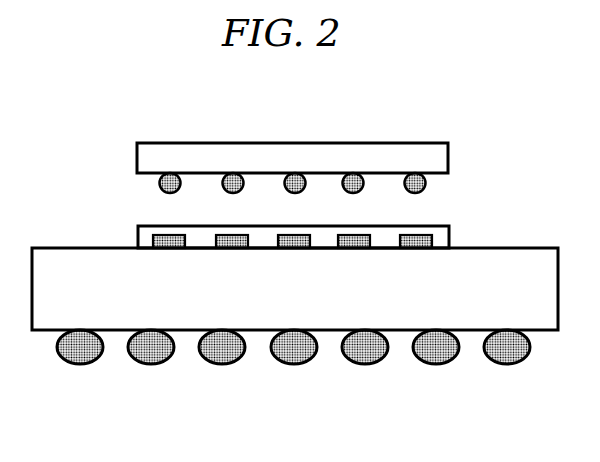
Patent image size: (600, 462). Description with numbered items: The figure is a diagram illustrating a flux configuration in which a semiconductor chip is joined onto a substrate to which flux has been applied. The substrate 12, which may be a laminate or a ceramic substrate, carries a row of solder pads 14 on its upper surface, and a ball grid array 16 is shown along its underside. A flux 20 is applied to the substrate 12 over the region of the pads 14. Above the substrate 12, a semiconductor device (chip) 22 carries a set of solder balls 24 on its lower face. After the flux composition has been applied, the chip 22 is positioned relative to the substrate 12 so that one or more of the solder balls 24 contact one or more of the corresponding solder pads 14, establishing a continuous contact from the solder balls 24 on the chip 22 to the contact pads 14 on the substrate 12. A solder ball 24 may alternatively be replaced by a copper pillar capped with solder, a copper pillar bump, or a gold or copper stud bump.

The substrate 12 is at (515, 248).
The pad 14 is at (164, 237).
The ball grid array 16 is at (78, 365).
The flux 20 is at (135, 242).
The semiconductor device (chip) 22 is at (407, 143).
The solder ball 24 is at (362, 189).